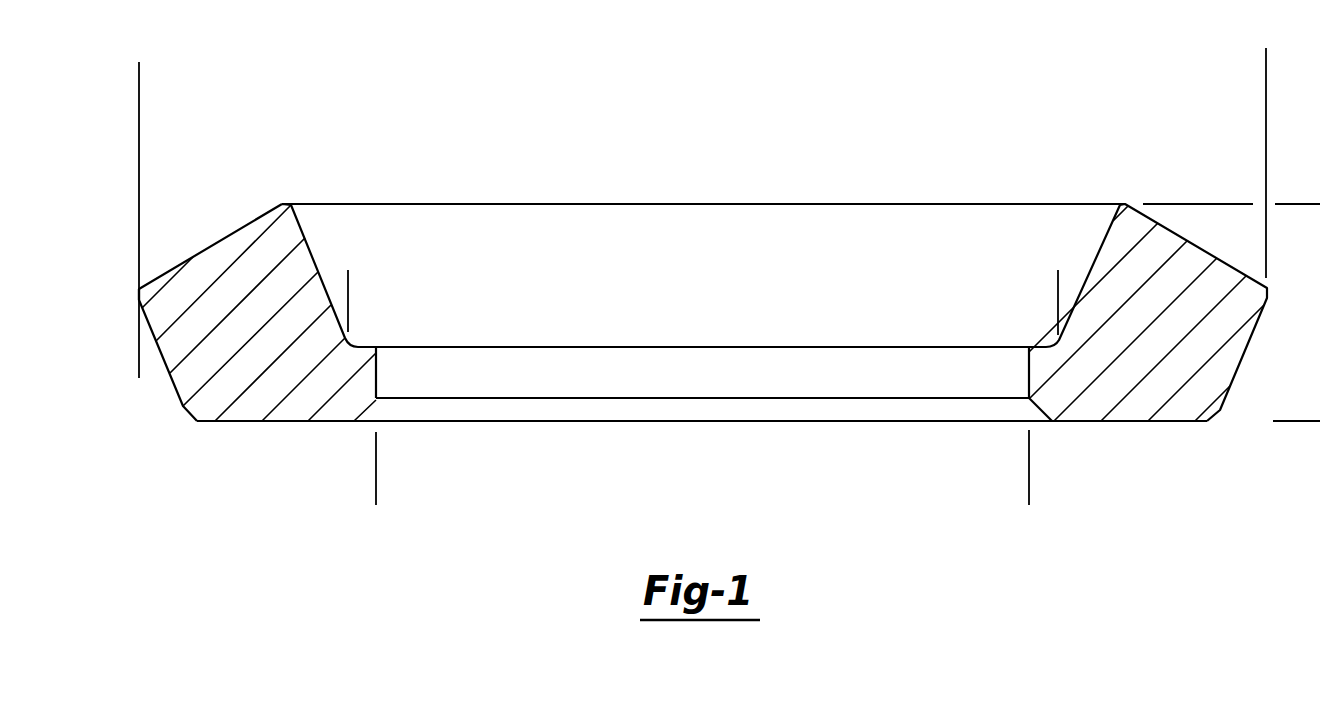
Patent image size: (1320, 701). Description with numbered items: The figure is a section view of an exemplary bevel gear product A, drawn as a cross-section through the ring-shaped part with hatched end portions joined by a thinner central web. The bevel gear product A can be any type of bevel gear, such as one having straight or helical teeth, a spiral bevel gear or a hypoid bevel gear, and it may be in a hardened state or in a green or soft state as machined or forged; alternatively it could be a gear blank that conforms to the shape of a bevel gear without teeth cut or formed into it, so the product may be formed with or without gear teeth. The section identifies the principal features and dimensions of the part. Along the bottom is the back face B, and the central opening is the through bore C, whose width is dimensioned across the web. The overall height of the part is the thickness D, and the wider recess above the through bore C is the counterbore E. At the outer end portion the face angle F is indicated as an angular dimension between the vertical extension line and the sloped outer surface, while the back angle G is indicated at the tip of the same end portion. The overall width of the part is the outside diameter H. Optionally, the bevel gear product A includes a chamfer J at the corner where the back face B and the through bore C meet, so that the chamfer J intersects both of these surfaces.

The bevel gear product A is at (250, 200).
The back face B is at (275, 421).
The through bore C is at (1029, 493).
The thickness D is at (1305, 204).
The counterbore E is at (1058, 303).
The face angle F is at (141, 178).
The back angle G is at (203, 337).
The outside diameter H is at (1266, 82).
The chamfer J is at (1037, 410).